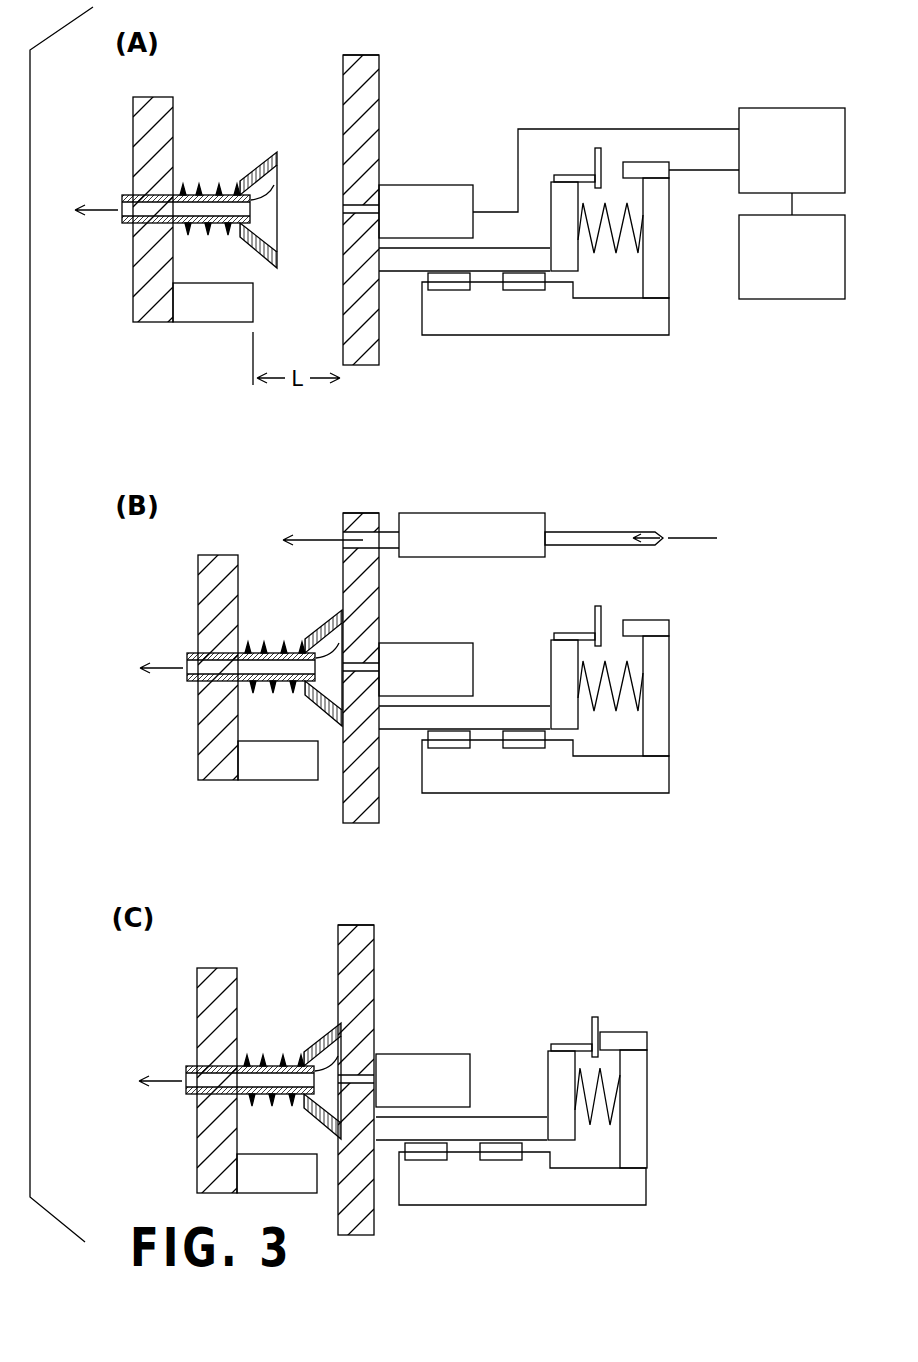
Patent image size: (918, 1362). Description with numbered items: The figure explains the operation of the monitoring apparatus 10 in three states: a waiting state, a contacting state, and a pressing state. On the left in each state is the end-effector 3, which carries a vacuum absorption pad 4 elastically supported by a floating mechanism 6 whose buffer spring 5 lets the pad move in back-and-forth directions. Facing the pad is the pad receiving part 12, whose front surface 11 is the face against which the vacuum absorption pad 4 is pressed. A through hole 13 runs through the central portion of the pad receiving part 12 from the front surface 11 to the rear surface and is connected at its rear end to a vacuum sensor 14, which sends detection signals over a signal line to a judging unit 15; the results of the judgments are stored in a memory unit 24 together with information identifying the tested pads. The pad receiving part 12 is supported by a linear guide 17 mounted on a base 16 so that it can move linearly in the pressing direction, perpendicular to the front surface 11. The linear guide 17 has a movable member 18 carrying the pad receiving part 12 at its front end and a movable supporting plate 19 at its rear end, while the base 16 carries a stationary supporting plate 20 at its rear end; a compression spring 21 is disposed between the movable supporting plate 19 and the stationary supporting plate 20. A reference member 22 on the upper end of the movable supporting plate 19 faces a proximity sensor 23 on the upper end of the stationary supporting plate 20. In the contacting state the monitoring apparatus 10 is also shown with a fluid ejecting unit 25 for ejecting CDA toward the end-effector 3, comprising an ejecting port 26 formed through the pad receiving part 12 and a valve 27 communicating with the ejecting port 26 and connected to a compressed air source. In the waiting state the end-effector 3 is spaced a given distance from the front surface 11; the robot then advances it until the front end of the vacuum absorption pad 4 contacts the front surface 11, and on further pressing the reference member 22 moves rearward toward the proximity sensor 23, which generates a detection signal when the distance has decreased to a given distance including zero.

The end-effector 3 is at (142, 120).
The vacuum absorption pad 4 is at (262, 163).
The buffer spring 5 is at (188, 232).
The floating mechanism 6 is at (210, 177).
The monitoring apparatus 10 is at (496, 160).
The front surface 11 is at (343, 85).
The pad receiving part 12 is at (372, 55).
The through hole 13 is at (348, 209).
The vacuum sensor 14 is at (418, 196).
The judging unit 15 is at (805, 108).
The base 16 is at (533, 310).
The linear guide 17 is at (456, 294).
The movable member 18 is at (406, 262).
The movable supporting plate 19 is at (558, 231).
The stationary supporting plate 20 is at (657, 238).
The compression spring 21 is at (607, 240).
The reference member 22 is at (595, 160).
The proximity sensor 23 is at (655, 168).
The memory unit 24 is at (808, 299).
The fluid ejecting unit 25 is at (585, 517).
The ejecting port 26 is at (360, 540).
The valve 27 is at (470, 515).